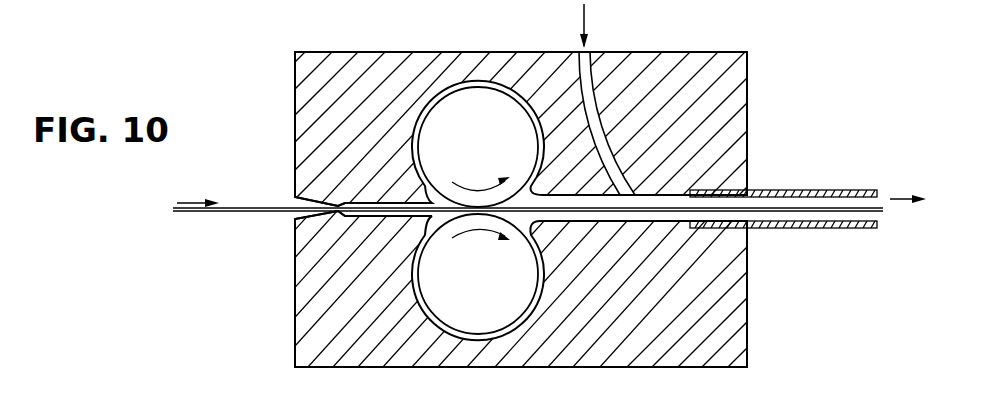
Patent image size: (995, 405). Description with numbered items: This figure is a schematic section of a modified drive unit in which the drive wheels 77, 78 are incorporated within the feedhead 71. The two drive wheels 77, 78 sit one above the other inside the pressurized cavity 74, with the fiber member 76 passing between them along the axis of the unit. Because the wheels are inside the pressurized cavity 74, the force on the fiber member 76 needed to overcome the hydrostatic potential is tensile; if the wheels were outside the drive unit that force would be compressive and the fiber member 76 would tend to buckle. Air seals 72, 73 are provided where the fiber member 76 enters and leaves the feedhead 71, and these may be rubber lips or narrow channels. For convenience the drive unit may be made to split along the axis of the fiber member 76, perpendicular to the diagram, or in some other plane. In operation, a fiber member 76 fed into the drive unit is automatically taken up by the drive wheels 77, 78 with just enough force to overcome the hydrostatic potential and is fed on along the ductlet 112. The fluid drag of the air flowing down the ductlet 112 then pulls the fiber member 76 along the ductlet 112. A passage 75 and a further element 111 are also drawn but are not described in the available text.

The feedhead 71 is at (673, 324).
The air seal 72 is at (749, 190).
The air seal 73 is at (325, 205).
The pressurized cavity 74 is at (657, 195).
The curved feed channel 75 is at (622, 50).
The fiber member 76 is at (845, 225).
The drive wheel 77 is at (488, 162).
The drive wheel 78 is at (485, 289).
The upper guide plate 111 is at (838, 188).
The ductlet 112 is at (785, 229).